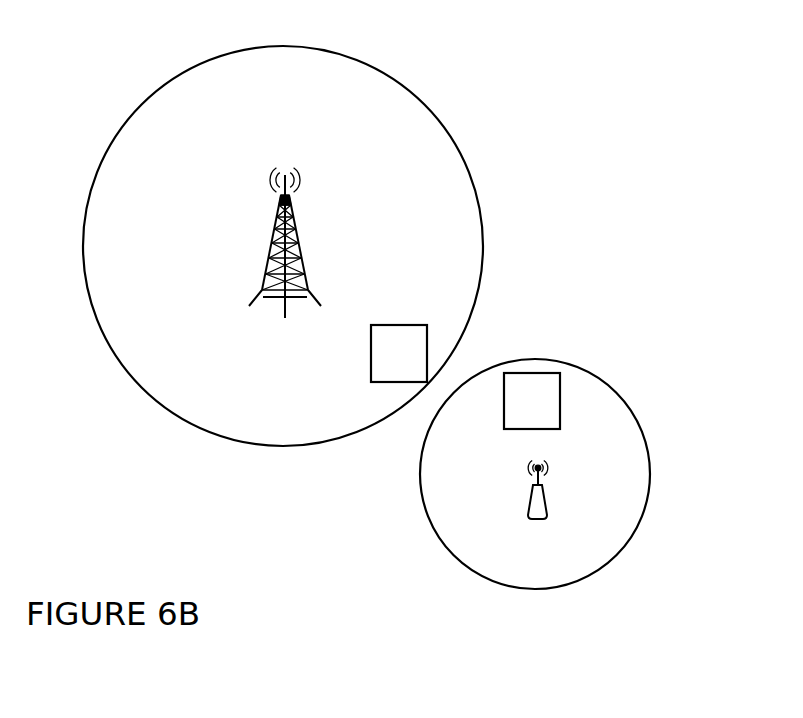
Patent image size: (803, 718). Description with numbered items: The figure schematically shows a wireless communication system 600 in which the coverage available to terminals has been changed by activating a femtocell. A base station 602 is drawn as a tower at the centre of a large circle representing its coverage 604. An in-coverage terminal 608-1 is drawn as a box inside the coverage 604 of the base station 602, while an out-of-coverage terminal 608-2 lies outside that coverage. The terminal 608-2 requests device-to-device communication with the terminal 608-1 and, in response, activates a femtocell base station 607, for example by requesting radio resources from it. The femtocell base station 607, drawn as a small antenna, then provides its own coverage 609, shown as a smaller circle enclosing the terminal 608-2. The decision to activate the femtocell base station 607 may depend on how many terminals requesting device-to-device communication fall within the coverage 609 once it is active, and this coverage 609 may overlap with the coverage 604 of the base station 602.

The wireless communication system 600 is at (548, 136).
The base station 602 is at (265, 262).
The coverage 604 is at (402, 85).
The femtocell base station 607 is at (547, 503).
The in-coverage terminal 608-1 is at (371, 345).
The out-of-coverage terminal 608-2 is at (533, 373).
The coverage 609 is at (640, 430).